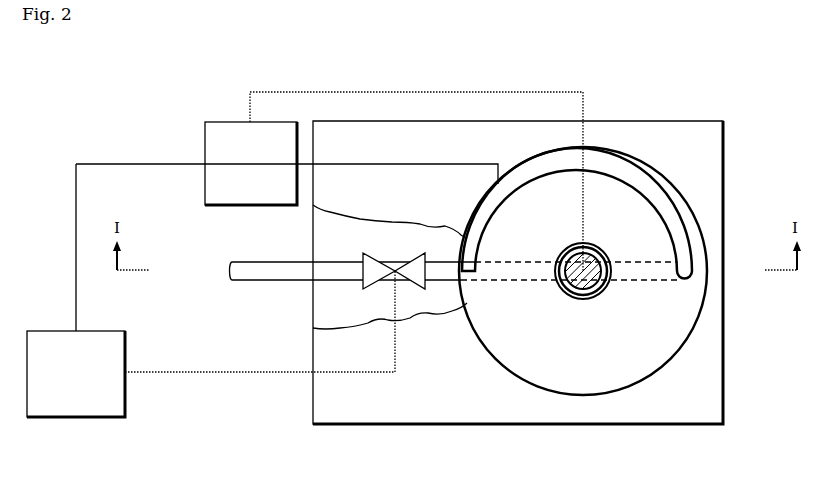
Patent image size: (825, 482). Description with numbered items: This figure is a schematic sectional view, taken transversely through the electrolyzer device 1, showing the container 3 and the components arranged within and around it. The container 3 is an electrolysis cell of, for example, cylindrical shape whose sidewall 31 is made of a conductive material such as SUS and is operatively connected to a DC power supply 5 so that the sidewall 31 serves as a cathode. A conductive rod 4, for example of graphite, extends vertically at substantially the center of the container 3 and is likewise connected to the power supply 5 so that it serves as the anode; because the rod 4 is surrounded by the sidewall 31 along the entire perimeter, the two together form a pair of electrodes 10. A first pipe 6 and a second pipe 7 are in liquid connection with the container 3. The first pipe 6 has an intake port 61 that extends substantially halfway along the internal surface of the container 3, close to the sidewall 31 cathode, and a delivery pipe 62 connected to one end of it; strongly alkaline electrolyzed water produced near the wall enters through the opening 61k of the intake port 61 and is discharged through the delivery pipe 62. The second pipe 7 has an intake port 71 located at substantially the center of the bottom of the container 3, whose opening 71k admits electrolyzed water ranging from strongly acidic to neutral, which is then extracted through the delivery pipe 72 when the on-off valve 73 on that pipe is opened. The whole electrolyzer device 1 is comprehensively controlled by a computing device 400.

The electrolyzer device 1 is at (617, 72).
The container 3 is at (630, 148).
The rod 4 is at (600, 295).
The DC power supply 5 is at (205, 142).
The first pipe 6 is at (638, 248).
The second pipe 7 is at (435, 355).
The pair of electrodes 10 is at (485, 269).
The sidewall 31 is at (495, 186).
The intake port 61 is at (653, 179).
The opening 61k is at (473, 273).
The delivery pipe 62 is at (638, 280).
The intake port 71 is at (577, 297).
The opening 71k is at (563, 293).
The delivery pipe 72 is at (284, 282).
The on-off valve 73 is at (370, 290).
The computing device 400 is at (103, 331).